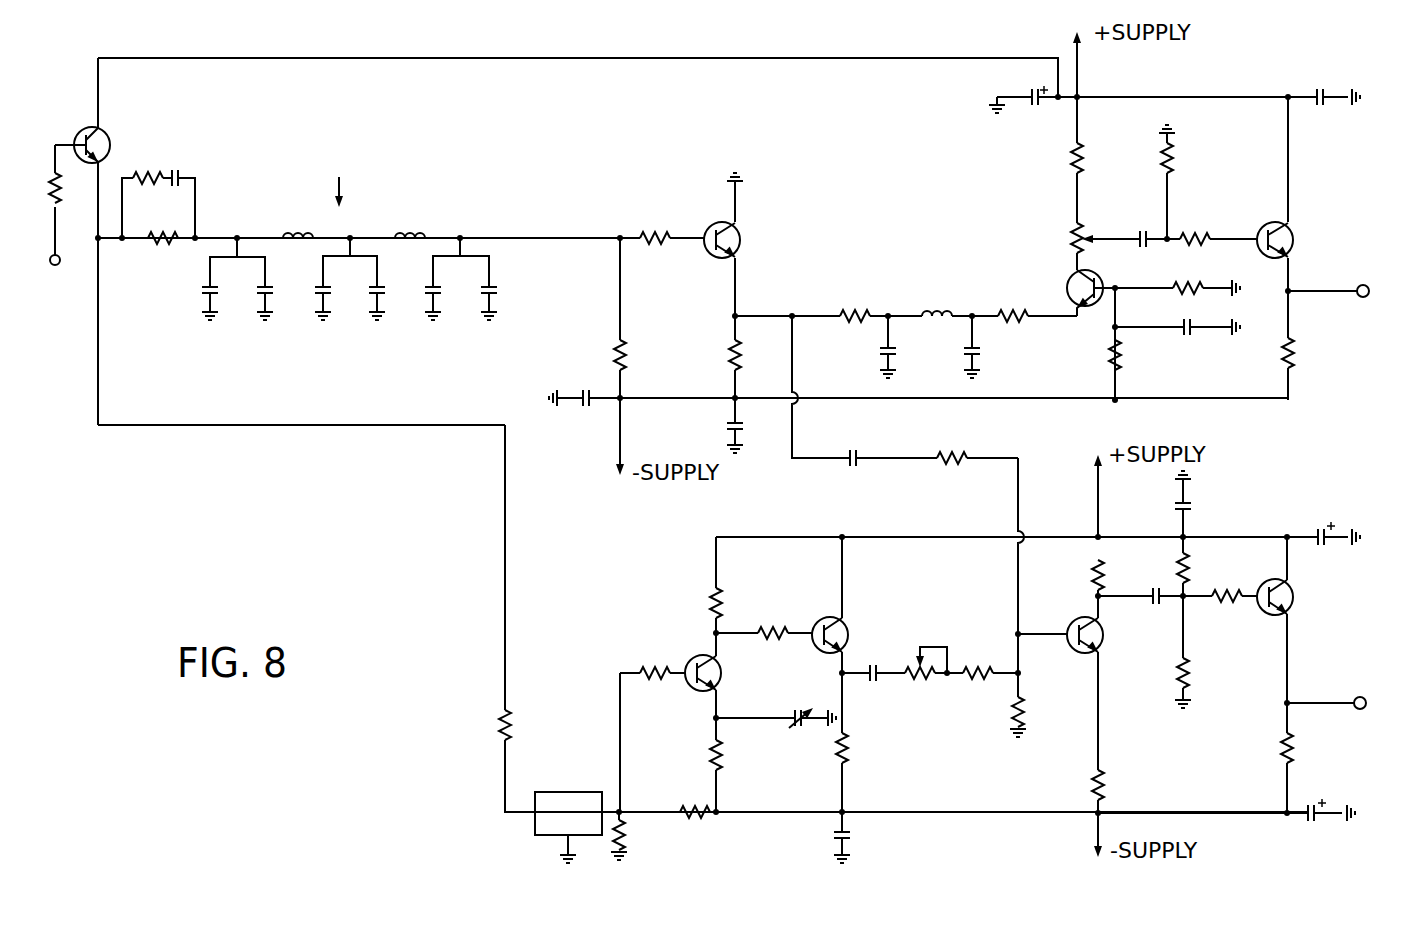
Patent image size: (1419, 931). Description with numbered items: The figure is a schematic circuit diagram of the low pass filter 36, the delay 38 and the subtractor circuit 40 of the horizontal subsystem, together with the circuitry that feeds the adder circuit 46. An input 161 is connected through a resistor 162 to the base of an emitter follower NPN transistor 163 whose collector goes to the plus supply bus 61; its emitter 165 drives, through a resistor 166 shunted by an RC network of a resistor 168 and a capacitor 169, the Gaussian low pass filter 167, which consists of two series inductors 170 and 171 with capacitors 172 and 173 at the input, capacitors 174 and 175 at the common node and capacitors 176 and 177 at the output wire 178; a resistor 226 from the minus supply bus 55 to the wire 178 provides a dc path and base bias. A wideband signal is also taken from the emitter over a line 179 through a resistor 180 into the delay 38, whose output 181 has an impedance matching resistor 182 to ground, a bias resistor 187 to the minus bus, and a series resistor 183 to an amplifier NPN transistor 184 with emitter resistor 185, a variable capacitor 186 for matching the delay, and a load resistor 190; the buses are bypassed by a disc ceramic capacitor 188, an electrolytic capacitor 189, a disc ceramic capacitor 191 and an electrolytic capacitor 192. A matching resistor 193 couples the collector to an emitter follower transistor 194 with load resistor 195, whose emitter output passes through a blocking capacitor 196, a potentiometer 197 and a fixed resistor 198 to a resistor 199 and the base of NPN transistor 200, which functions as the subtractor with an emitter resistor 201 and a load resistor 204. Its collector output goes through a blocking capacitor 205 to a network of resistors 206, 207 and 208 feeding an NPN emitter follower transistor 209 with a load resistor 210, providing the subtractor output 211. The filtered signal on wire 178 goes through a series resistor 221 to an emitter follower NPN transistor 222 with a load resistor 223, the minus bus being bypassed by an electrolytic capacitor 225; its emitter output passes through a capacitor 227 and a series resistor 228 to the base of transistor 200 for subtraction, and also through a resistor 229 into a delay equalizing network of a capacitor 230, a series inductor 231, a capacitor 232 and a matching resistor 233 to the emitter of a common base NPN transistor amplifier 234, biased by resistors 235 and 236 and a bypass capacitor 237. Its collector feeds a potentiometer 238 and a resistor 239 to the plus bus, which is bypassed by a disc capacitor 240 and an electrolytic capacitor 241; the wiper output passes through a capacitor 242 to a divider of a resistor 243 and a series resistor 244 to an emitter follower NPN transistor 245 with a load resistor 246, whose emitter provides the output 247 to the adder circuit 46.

The low pass filter 36 is at (446, 166).
The delay 38 is at (582, 826).
The subtractor circuit 40 is at (1249, 513).
The adder circuit 46 is at (954, 228).
The minus supply bus 55 is at (680, 400).
The plus supply bus 61 is at (1221, 96).
The input 161 is at (61, 263).
The resistor 162 is at (73, 186).
The emitter follower NPN transistor 163 is at (110, 145).
The emitter 165 is at (102, 178).
The resistor 166 is at (167, 244).
The Gaussian low pass filter 167 is at (322, 185).
The resistor 168 is at (130, 182).
The capacitor 169 is at (178, 174).
The inductor 170 is at (298, 232).
The inductor 171 is at (397, 236).
The capacitor 172 is at (205, 294).
The capacitor 173 is at (265, 284).
The capacitor 174 is at (322, 284).
The capacitor 175 is at (385, 270).
The capacitor 176 is at (442, 270).
The capacitor 177 is at (499, 270).
The wire 178 is at (548, 238).
The line 179 is at (347, 425).
The resistor 180 is at (509, 720).
The output 181 is at (620, 812).
The impedance matching resistor 182 is at (622, 843).
The series resistor 183 is at (673, 666).
The amplifier NPN transistor 184 is at (720, 662).
The resistor 185 is at (707, 752).
The variable capacitor 186 is at (805, 724).
The resistor 187 is at (685, 818).
The disc ceramic capacitor 188 is at (844, 827).
The electrolytic capacitor 189 is at (1316, 826).
The load resistor 190 is at (707, 596).
The disc ceramic capacitor 191 is at (1189, 502).
The electrolytic capacitor 192 is at (1329, 554).
The matching resistor 193 is at (761, 632).
The transistor 194 is at (847, 616).
The load resistor 195 is at (847, 734).
The blocking capacitor 196 is at (867, 672).
The potentiometer 197 is at (914, 680).
The fixed resistor 198 is at (967, 672).
The resistor 199 is at (1020, 700).
The NPN transistor 200 is at (1100, 615).
The resistor 201 is at (1100, 778).
The load resistor 204 is at (1094, 570).
The blocking capacitor 205 is at (1157, 594).
The resistor 206 is at (1189, 662).
The resistor 207 is at (1189, 554).
The resistor 208 is at (1237, 602).
The NPN emitter follower transistor 209 is at (1293, 597).
The load resistor 210 is at (1289, 736).
The output 211 is at (1351, 698).
The series resistor 221 is at (674, 233).
The emitter follower NPN transistor 222 is at (739, 226).
The load resistor 223 is at (736, 346).
The electrolytic capacitor 225 is at (588, 404).
The resistor 226 is at (622, 346).
The capacitor 227 is at (849, 456).
The series resistor 228 is at (949, 456).
The resistor 229 is at (848, 314).
The capacitor 230 is at (894, 343).
The inductor 231 is at (956, 313).
The capacitor 232 is at (982, 343).
The matching resistor 233 is at (1036, 313).
The NPN transistor amplifier 234 is at (1071, 278).
The bias resistor 235 is at (1111, 364).
The bias resistor 236 is at (1171, 289).
The bypass capacitor 237 is at (1185, 328).
The potentiometer 238 is at (1071, 238).
The resistor 239 is at (1079, 144).
The disc capacitor 240 is at (1325, 94).
The electrolytic capacitor 241 is at (1029, 87).
The capacitor 242 is at (1134, 232).
The resistor 243 is at (1172, 144).
The series resistor 244 is at (1187, 236).
The amplifier NPN transistor 245 is at (1290, 224).
The load resistor 246 is at (1293, 352).
The output 247 is at (1354, 288).